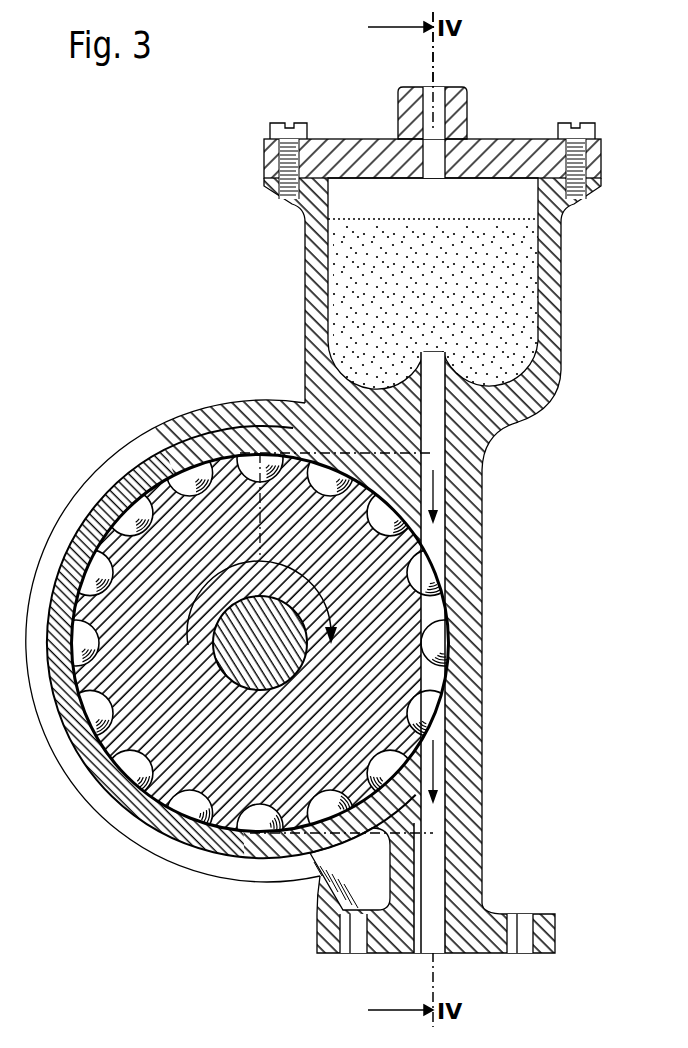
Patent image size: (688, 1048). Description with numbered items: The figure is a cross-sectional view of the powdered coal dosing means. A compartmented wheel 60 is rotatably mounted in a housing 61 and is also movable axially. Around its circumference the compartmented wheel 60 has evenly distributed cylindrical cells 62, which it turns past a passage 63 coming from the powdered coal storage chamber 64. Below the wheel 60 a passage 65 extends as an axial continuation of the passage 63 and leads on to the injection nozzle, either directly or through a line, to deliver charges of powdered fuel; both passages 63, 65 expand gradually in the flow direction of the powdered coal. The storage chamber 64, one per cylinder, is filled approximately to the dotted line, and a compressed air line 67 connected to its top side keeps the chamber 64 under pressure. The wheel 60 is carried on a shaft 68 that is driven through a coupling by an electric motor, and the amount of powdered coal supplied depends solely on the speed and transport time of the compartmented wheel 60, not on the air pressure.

The compartmented wheel 60 is at (260, 643).
The housing 61 is at (182, 833).
The cells 62 is at (153, 507).
The passage 63 is at (435, 542).
The storage chamber 64 is at (550, 300).
The passage 65 is at (440, 775).
The compressed air line 67 is at (453, 103).
The shaft 68 is at (292, 680).